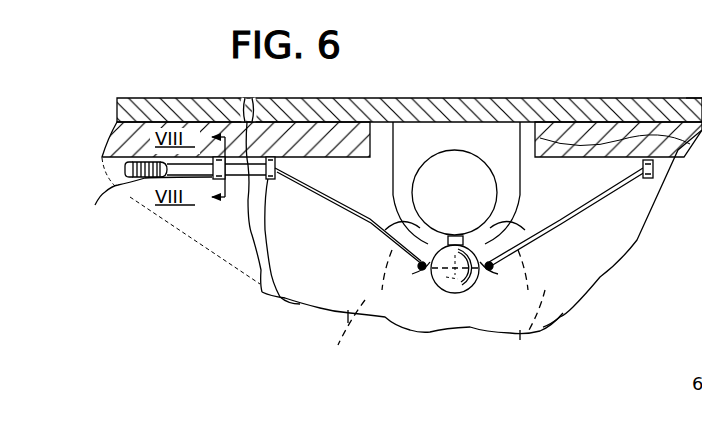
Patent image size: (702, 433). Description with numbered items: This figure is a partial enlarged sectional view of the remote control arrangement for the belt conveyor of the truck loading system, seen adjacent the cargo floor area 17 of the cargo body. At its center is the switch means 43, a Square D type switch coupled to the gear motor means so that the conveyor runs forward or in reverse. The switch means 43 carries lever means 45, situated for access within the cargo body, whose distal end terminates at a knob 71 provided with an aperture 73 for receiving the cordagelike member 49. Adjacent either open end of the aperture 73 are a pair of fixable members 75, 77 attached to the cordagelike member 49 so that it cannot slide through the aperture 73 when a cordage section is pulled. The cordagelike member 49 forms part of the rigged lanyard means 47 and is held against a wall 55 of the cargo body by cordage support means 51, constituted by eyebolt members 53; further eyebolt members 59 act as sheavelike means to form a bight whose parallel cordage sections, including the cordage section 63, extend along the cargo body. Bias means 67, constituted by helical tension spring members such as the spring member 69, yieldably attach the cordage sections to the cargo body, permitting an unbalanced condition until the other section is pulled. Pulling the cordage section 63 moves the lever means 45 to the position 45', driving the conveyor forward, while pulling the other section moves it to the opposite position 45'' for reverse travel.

The cargo floor area 17 is at (595, 248).
The switch means 43 is at (463, 201).
The lever means 45 is at (412, 329).
The lever means in one direction 45' is at (351, 301).
The lever means in opposite direction 45'' is at (536, 308).
The rigged lanyard means 47 is at (626, 202).
The cordagelike member 49 is at (309, 246).
The cordage support means 51 is at (312, 172).
The eyebolt members 53 is at (152, 183).
The wall 55 is at (446, 110).
The eyebolt members 59 is at (654, 176).
The cordage section 63 is at (610, 196).
The bias means 67 is at (699, 96).
The helical tension spring member 69 is at (113, 190).
The knob 71 is at (448, 290).
The aperture 73 is at (458, 298).
The fixable member 75 is at (417, 277).
The fixable member 77 is at (492, 272).